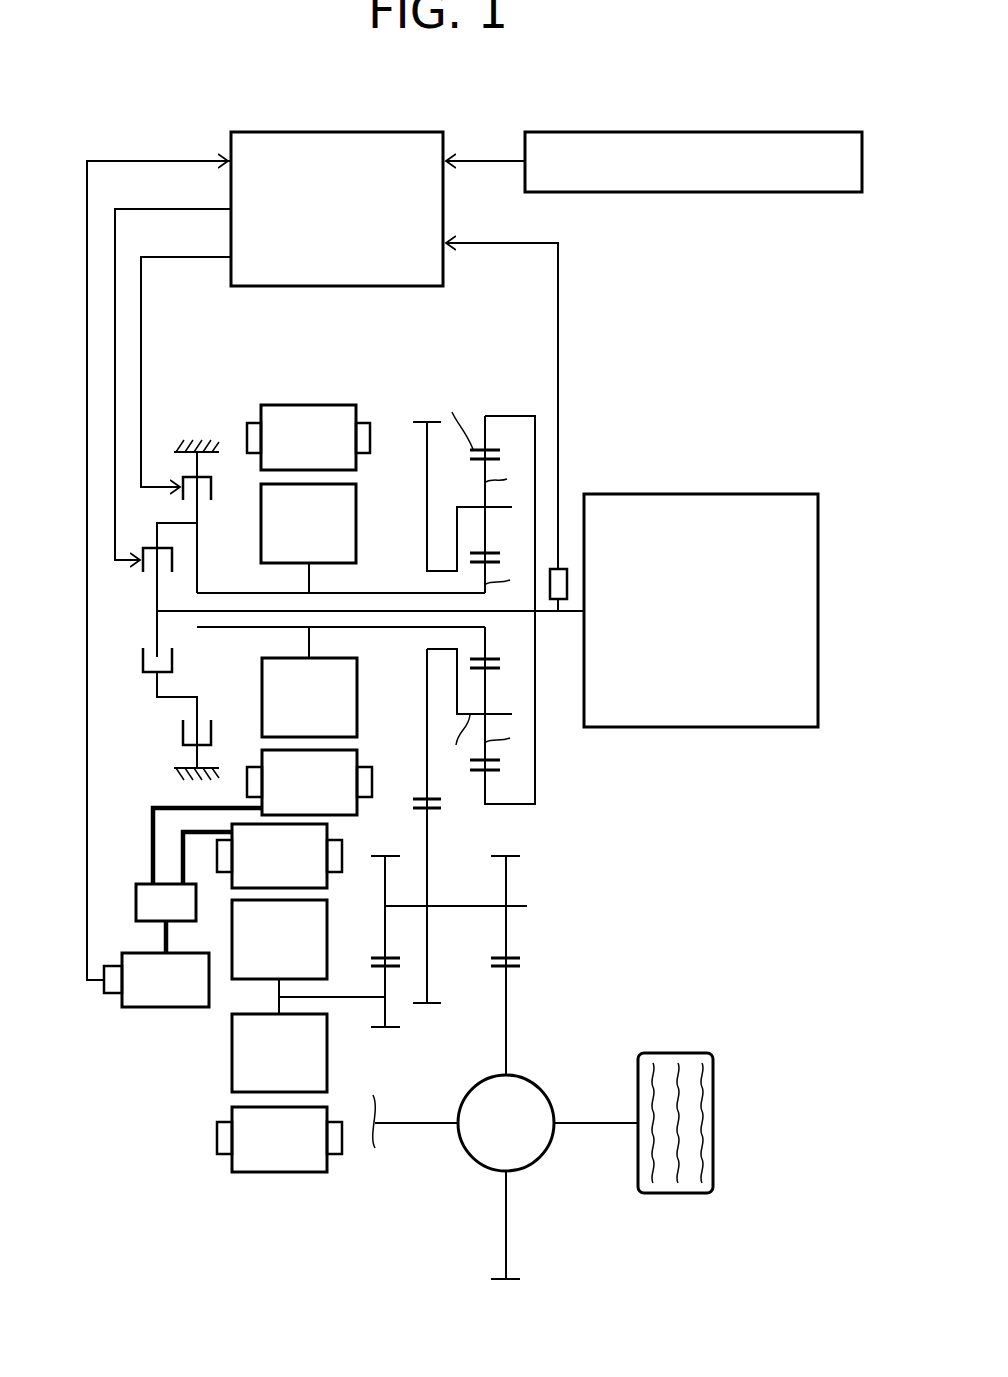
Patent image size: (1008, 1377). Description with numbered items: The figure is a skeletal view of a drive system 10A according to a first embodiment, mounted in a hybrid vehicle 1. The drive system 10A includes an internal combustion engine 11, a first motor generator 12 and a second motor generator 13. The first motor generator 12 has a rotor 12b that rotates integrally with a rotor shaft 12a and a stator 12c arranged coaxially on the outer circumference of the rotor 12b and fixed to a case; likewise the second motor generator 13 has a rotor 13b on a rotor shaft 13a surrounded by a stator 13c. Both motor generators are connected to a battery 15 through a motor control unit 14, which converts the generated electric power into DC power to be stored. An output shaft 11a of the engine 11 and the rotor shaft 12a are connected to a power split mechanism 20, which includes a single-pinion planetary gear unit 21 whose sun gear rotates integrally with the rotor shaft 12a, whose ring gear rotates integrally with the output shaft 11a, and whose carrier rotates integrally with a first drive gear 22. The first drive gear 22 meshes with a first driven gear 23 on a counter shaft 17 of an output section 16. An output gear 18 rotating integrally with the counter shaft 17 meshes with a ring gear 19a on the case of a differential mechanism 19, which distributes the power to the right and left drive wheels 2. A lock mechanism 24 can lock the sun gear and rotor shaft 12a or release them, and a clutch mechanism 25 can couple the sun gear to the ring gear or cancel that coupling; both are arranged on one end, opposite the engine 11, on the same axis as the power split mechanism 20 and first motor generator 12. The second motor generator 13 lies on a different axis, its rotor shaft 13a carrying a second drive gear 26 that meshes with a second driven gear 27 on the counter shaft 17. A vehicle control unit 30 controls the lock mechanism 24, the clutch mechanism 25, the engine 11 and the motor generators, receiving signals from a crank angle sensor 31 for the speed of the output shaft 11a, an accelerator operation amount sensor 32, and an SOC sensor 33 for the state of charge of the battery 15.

The hybrid vehicle 1 is at (204, 1242).
The drive wheels 2 is at (690, 1193).
The drive system 10A is at (700, 318).
The internal combustion engine 11 is at (677, 727).
The output shaft 11a is at (560, 612).
The first motor generator 12 is at (341, 553).
The rotor shaft 12a is at (393, 593).
The rotor 12b is at (348, 520).
The stator 12c is at (328, 420).
The second motor generator 13 is at (265, 1044).
The rotor shaft 13a is at (348, 1000).
The rotor 13b is at (240, 1075).
The stator 13c is at (240, 1162).
The motor control unit 14 is at (149, 888).
The battery 15 is at (164, 1007).
The output section 16 is at (520, 1063).
The counter shaft 17 is at (527, 906).
The output gear 18 is at (506, 933).
The differential mechanism 19 is at (528, 1095).
The ring gear 19a is at (506, 1020).
The power split mechanism 20 is at (450, 656).
The planetary gear unit 21 is at (488, 403).
The first drive gear 22 is at (427, 708).
The first driven gear 23 is at (427, 838).
The lock mechanism 24 is at (210, 507).
The clutch mechanism 25 is at (142, 682).
The second drive gear 26 is at (385, 1017).
The second driven gear 27 is at (385, 928).
The vehicle control unit 30 is at (443, 200).
The crank angle sensor 31 is at (567, 580).
The accelerator operation amount sensor 32 is at (685, 192).
The SOC sensor 33 is at (110, 993).